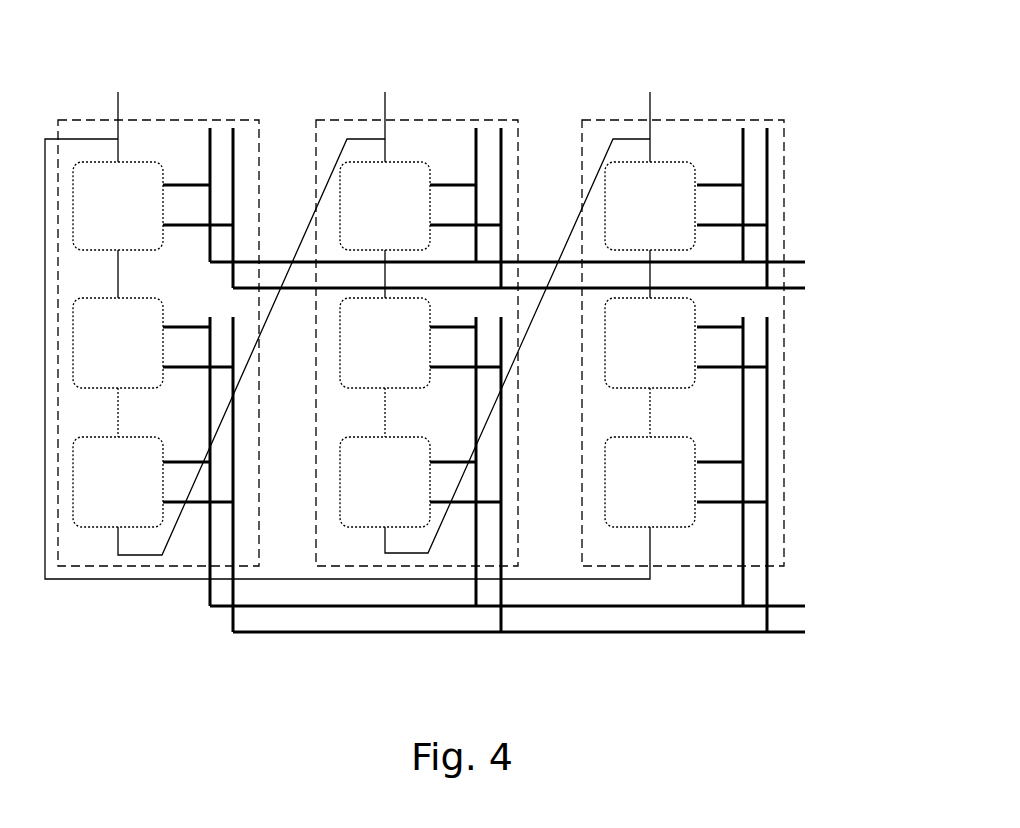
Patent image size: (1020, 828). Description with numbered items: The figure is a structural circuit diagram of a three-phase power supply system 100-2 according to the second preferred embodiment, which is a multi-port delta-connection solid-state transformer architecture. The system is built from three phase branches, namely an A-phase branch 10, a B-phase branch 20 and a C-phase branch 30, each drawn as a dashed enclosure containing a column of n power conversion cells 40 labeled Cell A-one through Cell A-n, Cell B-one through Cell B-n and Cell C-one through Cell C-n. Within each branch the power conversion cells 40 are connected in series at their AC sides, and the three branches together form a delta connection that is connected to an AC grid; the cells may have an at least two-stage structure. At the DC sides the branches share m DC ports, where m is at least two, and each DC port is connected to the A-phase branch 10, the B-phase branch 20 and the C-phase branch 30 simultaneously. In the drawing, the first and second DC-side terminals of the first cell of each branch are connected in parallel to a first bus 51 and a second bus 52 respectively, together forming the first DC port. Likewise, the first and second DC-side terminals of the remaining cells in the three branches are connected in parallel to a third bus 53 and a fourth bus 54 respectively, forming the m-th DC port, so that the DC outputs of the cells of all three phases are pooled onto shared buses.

The three-phase power supply system 100-2 is at (104, 26).
The A-phase branch 10 is at (138, 122).
The B-phase branch 20 is at (395, 122).
The C-phase branch 30 is at (660, 122).
The power conversion cell 40 is at (148, 160).
The first bus 51 is at (795, 262).
The second bus 52 is at (797, 290).
The third bus 53 is at (783, 606).
The fourth bus 54 is at (781, 634).